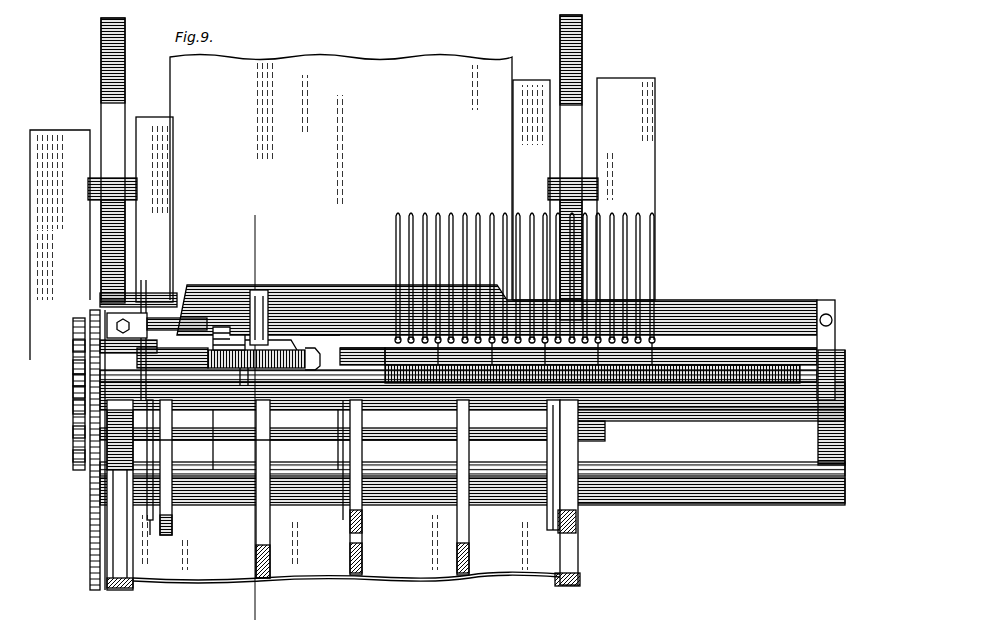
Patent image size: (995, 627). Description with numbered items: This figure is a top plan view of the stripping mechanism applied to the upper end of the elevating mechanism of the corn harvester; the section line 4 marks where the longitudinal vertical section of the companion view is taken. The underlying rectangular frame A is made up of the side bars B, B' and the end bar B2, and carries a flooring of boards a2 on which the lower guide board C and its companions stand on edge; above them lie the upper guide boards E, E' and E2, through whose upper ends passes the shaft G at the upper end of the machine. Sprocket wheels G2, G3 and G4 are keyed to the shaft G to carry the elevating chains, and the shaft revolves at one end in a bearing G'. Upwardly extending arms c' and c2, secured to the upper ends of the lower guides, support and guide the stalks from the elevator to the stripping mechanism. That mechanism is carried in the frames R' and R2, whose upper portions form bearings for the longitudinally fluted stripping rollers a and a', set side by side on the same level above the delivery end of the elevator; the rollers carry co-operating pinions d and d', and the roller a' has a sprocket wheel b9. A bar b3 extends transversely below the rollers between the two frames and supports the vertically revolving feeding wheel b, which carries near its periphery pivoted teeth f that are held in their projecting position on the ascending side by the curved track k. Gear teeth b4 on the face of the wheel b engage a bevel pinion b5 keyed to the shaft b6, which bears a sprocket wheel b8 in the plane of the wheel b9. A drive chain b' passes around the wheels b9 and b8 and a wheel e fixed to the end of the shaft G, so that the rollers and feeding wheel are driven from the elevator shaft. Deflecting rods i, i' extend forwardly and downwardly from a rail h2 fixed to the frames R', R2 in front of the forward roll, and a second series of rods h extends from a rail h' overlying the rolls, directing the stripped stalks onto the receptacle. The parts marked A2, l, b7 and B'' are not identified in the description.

The frame block A2 is at (60, 245).
The rectangular frame A is at (341, 178).
The section line 4— 4 is at (258, 618).
The rod l is at (147, 283).
The transverse bar b3 is at (368, 314).
The gear teeth b4 is at (314, 318).
The rods h is at (473, 346).
The deflecting rods i is at (525, 289).
The deflecting rod i' is at (525, 298).
The feeding wheel b is at (256, 354).
The drive chain b' is at (265, 303).
The bevel pinion b5 is at (220, 332).
The teeth f is at (244, 376).
The curved track k is at (315, 359).
The stripping roller a is at (578, 347).
The rail h' is at (730, 374).
The frame R' is at (817, 382).
The end bar B2 is at (472, 426).
The stripping roller a' is at (472, 440).
The upper guide board E2 is at (568, 470).
The frame R2 is at (120, 428).
The shaft b6 is at (76, 342).
The pinion d is at (60, 349).
The rail h2 is at (76, 370).
The sprocket wheel b8 is at (76, 372).
The sprocket wheel b9 is at (80, 388).
The pinion d' is at (61, 417).
The link b7 is at (80, 432).
The wheel e is at (76, 457).
The side bar B is at (120, 495).
The upper guide board E is at (172, 460).
The sprocket wheel G2 is at (164, 467).
The bearing G' is at (150, 538).
The shaft G is at (224, 440).
The lower guide board C is at (269, 489).
The bar B'' is at (354, 459).
The upwardly extending arm c' is at (339, 487).
The sprocket wheel G3 is at (328, 474).
The upper guide board E' is at (360, 460).
The upwardly extending arm c2 is at (480, 487).
The sprocket wheel G4 is at (545, 470).
The side bar B' is at (582, 493).
The flooring boards a2 is at (386, 581).